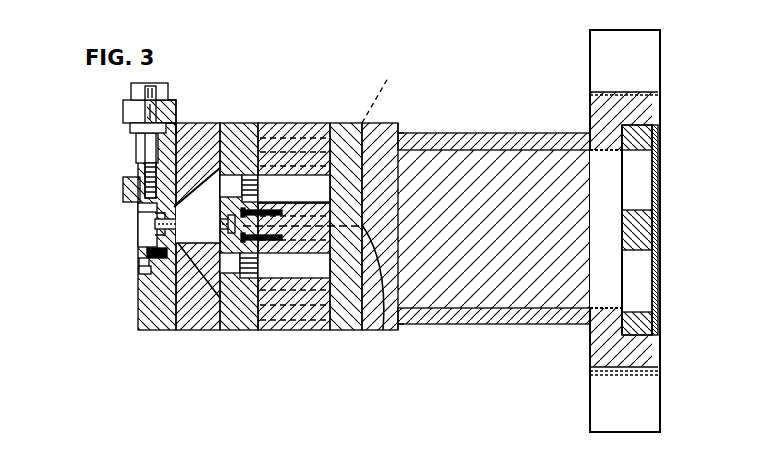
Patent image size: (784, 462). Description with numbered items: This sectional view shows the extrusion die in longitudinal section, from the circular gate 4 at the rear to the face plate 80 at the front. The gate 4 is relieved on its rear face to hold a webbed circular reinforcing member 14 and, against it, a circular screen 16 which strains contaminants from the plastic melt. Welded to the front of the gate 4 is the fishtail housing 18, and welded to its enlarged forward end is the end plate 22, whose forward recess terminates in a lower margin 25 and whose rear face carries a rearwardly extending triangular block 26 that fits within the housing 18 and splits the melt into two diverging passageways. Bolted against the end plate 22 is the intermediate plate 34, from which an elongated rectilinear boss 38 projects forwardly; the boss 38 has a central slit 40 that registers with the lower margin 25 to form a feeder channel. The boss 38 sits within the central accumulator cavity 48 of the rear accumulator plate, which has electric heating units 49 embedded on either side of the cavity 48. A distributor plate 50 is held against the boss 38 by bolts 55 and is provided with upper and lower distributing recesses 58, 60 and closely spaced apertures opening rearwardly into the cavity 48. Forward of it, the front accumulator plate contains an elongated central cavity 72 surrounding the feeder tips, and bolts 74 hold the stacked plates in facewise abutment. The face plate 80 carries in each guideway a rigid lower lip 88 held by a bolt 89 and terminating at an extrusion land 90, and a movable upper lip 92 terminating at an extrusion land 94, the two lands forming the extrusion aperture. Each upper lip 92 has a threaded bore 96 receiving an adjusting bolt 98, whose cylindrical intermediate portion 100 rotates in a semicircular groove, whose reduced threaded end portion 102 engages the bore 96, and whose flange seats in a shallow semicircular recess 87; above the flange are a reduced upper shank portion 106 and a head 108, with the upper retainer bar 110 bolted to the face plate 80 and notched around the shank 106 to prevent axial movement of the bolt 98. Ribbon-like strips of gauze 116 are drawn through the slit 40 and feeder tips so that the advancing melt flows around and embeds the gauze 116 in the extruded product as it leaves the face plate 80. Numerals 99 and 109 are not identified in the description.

The circular gate 4 is at (628, 31).
The webbed circular reinforcing member 14 is at (640, 330).
The circular screen 16 is at (658, 134).
The fishtail housing 18 is at (494, 133).
The end plate 22 is at (368, 331).
The lower margin 25 is at (384, 332).
The triangular block 26 is at (518, 286).
The intermediate plate 34 is at (344, 331).
The rectilinear boss 38 is at (294, 265).
The slit 40 is at (310, 220).
The central accumulator cavity 48 is at (278, 182).
The electric heating units 49 is at (382, 126).
The distributor plate 50 is at (248, 331).
The bolts 55 is at (262, 243).
The upper distributing recess 58 is at (230, 176).
The lower distributing recess 60 is at (230, 272).
The elongated central cavity 72 is at (210, 262).
The bolts 74 is at (283, 317).
The face plate 80 is at (161, 331).
The shallow semicircular recess 87 is at (172, 128).
The rigid lower lip 88 is at (139, 270).
The bolt 89 is at (139, 262).
The extrusion land 90 is at (147, 252).
The movable upper lip 92 is at (140, 212).
The extrusion land 94 is at (155, 222).
The threaded bore 96 is at (145, 178).
The adjusting bolt 98 is at (157, 85).
The collar 99 is at (140, 226).
The cylindrical intermediate portion 100 is at (136, 140).
The reduced threaded end portion 102 is at (123, 189).
The reduced upper shank portion 106 is at (163, 104).
The head 108 is at (131, 88).
The washer 109 is at (130, 128).
The upper retainer bar 110 is at (123, 108).
The gauze 116 is at (392, 80).